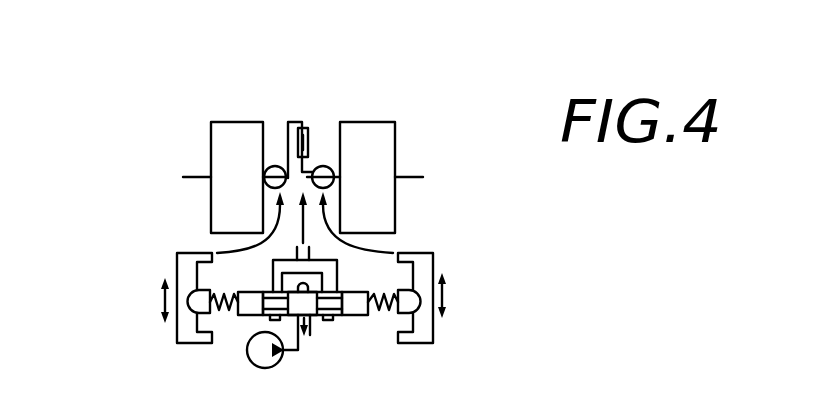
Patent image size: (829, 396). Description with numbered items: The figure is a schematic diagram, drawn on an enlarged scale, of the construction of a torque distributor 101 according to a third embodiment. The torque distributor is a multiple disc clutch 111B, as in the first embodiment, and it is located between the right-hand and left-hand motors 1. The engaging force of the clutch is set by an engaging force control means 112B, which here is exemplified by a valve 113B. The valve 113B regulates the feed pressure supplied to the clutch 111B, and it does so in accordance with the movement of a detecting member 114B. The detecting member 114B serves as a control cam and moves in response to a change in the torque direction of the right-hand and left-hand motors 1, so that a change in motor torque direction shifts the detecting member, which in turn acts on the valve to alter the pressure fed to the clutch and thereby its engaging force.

The motors 1 is at (223, 150).
The torque distributor 101 is at (274, 112).
The multiple disc clutch 111B is at (308, 126).
The engaging force control means 112B is at (425, 236).
The valve 113B is at (327, 320).
The detecting member 114B is at (181, 270).